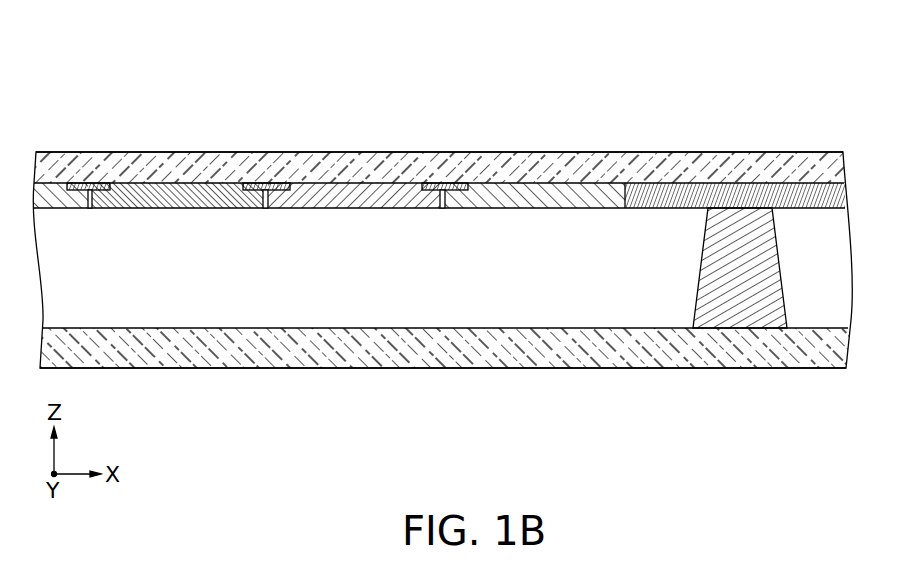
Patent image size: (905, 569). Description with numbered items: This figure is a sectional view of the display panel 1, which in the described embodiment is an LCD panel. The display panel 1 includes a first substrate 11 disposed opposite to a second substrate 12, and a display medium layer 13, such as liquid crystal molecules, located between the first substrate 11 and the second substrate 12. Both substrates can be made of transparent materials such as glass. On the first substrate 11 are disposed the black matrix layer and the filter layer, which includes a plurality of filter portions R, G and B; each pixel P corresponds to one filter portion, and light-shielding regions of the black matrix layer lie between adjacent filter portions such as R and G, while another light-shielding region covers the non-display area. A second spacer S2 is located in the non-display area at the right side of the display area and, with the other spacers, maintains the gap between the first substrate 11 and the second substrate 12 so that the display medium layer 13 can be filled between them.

The display panel 1 is at (197, 76).
The first substrate 11 is at (815, 166).
The second substrate 12 is at (830, 350).
The display medium layer 13 is at (93, 262).
The pixel P is at (124, 178).
The filter portion R is at (172, 194).
The filter portion G is at (346, 192).
The second spacer S2 is at (738, 318).